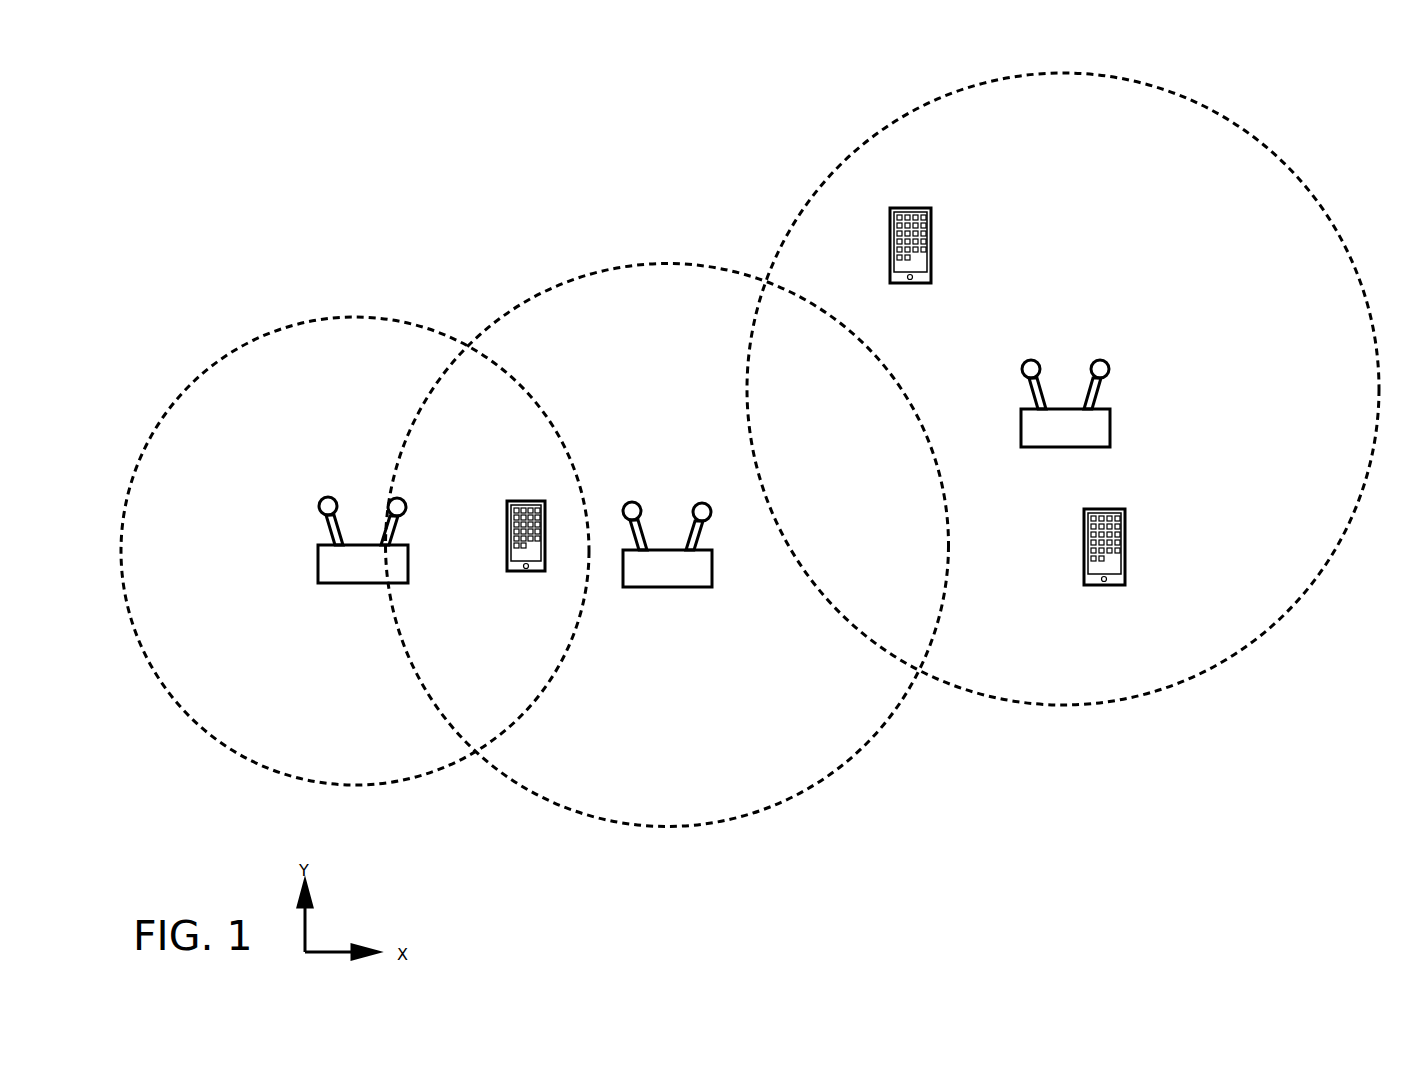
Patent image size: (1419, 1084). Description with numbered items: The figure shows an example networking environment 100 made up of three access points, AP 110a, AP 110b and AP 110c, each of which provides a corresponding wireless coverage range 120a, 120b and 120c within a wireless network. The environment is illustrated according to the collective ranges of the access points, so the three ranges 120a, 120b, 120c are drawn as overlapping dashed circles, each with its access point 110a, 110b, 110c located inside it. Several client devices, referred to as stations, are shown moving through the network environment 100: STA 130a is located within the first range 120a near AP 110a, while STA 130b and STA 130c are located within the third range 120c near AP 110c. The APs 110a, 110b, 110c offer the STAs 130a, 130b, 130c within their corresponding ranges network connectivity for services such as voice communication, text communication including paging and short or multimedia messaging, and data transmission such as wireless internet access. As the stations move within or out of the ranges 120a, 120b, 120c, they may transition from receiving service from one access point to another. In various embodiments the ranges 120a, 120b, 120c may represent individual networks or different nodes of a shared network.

The networking environment 100 is at (262, 128).
The AP 110a is at (335, 583).
The AP 110b is at (643, 587).
The AP 110c is at (1110, 425).
The range 120a is at (352, 317).
The range 120b is at (620, 265).
The range 120c is at (1232, 120).
The STA 130a is at (507, 519).
The STA 130b is at (931, 248).
The STA 130c is at (1125, 543).